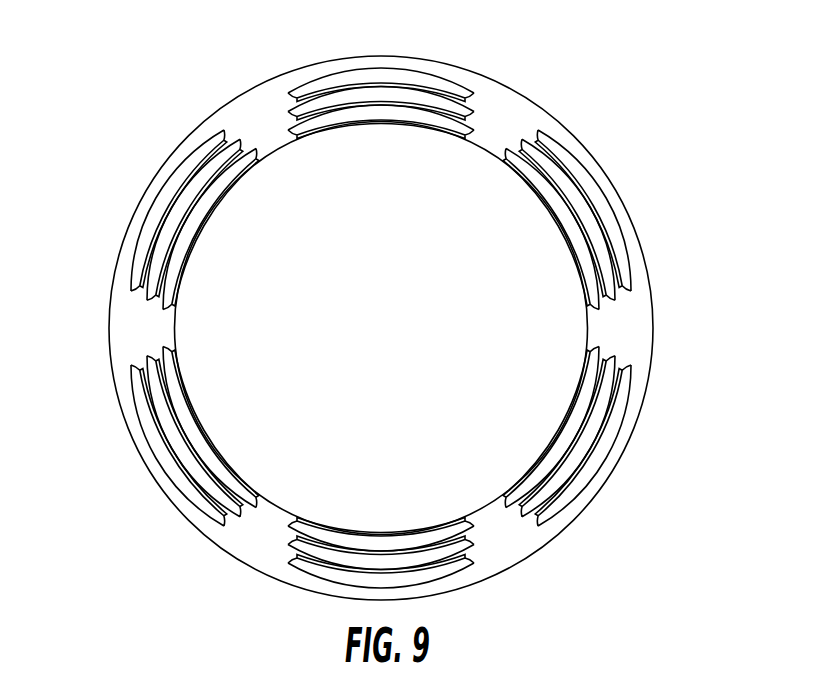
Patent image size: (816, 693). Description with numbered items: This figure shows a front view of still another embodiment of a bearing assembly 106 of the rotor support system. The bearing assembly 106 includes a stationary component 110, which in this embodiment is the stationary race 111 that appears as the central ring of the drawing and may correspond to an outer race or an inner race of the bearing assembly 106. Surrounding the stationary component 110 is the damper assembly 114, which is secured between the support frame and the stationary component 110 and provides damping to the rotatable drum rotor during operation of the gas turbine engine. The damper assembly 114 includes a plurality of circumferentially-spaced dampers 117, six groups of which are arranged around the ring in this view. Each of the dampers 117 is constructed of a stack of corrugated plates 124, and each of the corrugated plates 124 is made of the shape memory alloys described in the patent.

The bearing assembly 106 is at (395, 314).
The damper assembly 114 is at (395, 320).
The damper 117 is at (363, 314).
The corrugated plate 124 is at (290, 90).
The stationary component 110 is at (381, 328).
The stationary race 111 is at (421, 343).